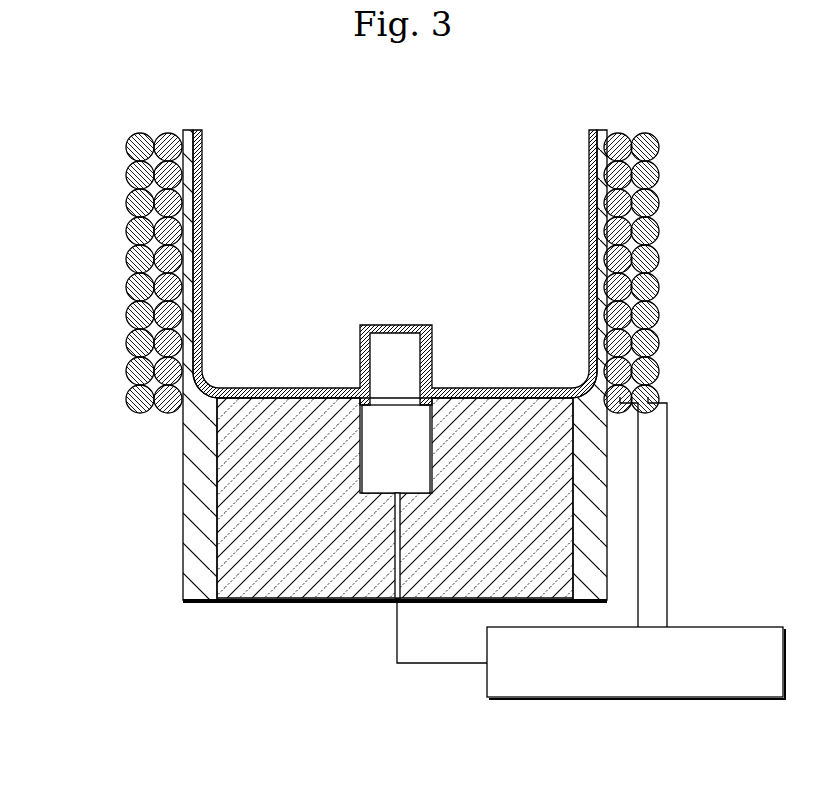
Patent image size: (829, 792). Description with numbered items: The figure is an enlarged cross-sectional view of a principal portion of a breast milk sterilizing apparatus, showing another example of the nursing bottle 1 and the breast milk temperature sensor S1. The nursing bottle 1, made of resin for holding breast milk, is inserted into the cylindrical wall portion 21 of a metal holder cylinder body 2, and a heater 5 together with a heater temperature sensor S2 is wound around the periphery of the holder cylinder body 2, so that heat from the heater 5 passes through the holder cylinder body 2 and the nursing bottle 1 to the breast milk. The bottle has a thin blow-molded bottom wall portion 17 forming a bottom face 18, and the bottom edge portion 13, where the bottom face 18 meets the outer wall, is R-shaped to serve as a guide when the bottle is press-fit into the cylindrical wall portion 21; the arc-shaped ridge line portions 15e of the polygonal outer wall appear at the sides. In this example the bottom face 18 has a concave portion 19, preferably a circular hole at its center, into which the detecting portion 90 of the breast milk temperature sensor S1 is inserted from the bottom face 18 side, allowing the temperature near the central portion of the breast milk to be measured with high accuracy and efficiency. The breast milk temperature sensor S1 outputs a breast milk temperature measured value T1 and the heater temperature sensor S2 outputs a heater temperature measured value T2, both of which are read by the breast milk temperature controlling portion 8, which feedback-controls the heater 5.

The nursing bottle 1 is at (313, 396).
The holder cylinder body 2 is at (660, 201).
The heater 5 is at (163, 420).
The breast milk temperature controlling portion 8 is at (568, 706).
The bottom edge portion 13 is at (600, 408).
The ridge line portion 15e is at (130, 242).
The bottom wall portion 17 is at (539, 378).
The bottom face 18 is at (273, 415).
The concave portion 19 is at (362, 360).
The cylindrical wall portion 21 is at (590, 222).
The detecting portion 90 is at (432, 340).
The breast milk temperature sensor S1 is at (438, 432).
The heater temperature sensor S2 is at (680, 368).
The breast milk temperature measured value T1 is at (465, 650).
The heater temperature measured value T2 is at (678, 518).